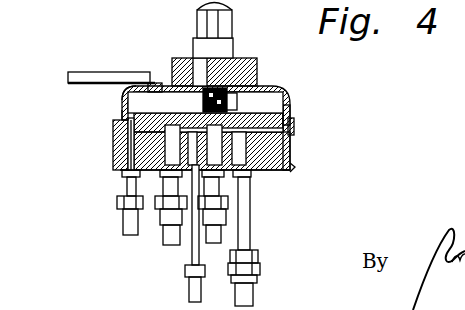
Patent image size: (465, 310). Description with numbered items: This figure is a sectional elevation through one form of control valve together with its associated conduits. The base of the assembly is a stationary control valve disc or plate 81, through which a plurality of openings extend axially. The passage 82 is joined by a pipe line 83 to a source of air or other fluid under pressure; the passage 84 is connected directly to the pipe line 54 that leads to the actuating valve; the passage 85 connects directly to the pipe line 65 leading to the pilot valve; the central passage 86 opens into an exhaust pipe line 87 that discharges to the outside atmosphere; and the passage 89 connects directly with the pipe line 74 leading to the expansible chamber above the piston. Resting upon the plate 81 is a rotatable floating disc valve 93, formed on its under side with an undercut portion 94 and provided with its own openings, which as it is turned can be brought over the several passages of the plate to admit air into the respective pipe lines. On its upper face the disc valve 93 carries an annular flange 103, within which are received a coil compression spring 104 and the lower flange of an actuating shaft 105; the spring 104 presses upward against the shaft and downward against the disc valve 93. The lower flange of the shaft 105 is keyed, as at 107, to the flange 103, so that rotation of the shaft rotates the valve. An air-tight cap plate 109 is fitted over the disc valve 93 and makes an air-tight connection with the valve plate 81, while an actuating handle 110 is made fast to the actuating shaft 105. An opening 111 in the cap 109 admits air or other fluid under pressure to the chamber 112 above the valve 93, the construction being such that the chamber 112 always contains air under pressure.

The pipe line 54 is at (168, 243).
The pipe line 65 is at (192, 261).
The pipe line 74 is at (252, 294).
The stationary control valve disc 81 is at (292, 170).
The passage 82 is at (113, 150).
The pipe line 83 is at (118, 187).
The passage 84 is at (114, 143).
The passage 85 is at (177, 127).
The central passage 86 is at (255, 145).
The exhaust pipe line 87 is at (250, 231).
The passage 89 is at (240, 153).
The rotatable floating disc valve 93 is at (284, 116).
The undercut portion 94 is at (262, 100).
The annular flange 103 is at (190, 68).
The coil compression spring 104 is at (238, 63).
The actuating shaft 105 is at (213, 62).
The key 107 is at (270, 80).
The air-tight cap plate 109 is at (124, 96).
The actuating handle 110 is at (93, 72).
The opening 111 is at (122, 113).
The chamber 112 is at (150, 74).